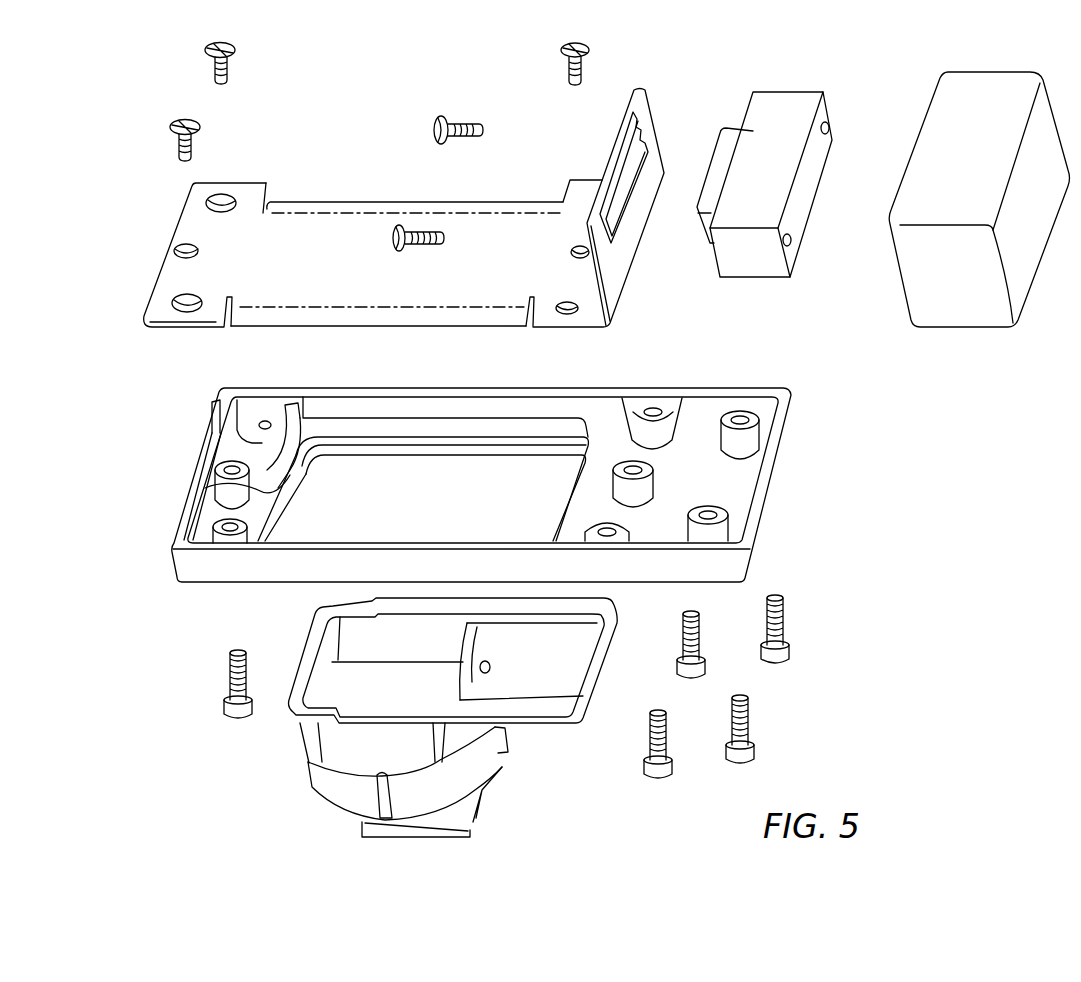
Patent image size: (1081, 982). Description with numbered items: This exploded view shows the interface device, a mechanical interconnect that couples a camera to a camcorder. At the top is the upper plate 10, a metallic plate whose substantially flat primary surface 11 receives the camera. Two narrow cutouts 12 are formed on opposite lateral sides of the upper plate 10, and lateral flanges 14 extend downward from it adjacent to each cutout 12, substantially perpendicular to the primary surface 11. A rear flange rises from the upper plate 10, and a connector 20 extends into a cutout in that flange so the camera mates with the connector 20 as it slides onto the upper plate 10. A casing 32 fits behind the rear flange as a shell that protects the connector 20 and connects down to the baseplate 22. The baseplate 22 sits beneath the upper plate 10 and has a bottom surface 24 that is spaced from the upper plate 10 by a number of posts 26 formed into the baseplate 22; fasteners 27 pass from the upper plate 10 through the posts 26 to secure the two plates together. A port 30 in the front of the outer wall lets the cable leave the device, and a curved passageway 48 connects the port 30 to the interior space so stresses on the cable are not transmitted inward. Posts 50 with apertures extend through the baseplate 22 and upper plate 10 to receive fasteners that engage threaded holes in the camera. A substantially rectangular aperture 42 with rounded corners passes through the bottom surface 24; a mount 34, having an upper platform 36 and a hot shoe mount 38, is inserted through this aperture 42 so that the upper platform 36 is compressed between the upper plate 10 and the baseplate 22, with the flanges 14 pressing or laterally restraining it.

The upper plate 10 is at (302, 152).
The primary surface 11 is at (330, 230).
The cutouts 12 is at (380, 202).
The lateral flanges 14 is at (291, 330).
The connector 20 is at (782, 108).
The baseplate 22 is at (805, 458).
The bottom surface 24 is at (737, 481).
The posts 26 is at (216, 524).
The fasteners 27 is at (230, 679).
The port 30 is at (207, 443).
The casing 32 is at (983, 90).
The mount 34 is at (297, 773).
The upper platform 36 is at (541, 727).
The hot shoe mount 38 is at (466, 822).
The aperture 42 is at (413, 497).
The curved passageway 48 is at (237, 433).
The posts 50 is at (219, 471).